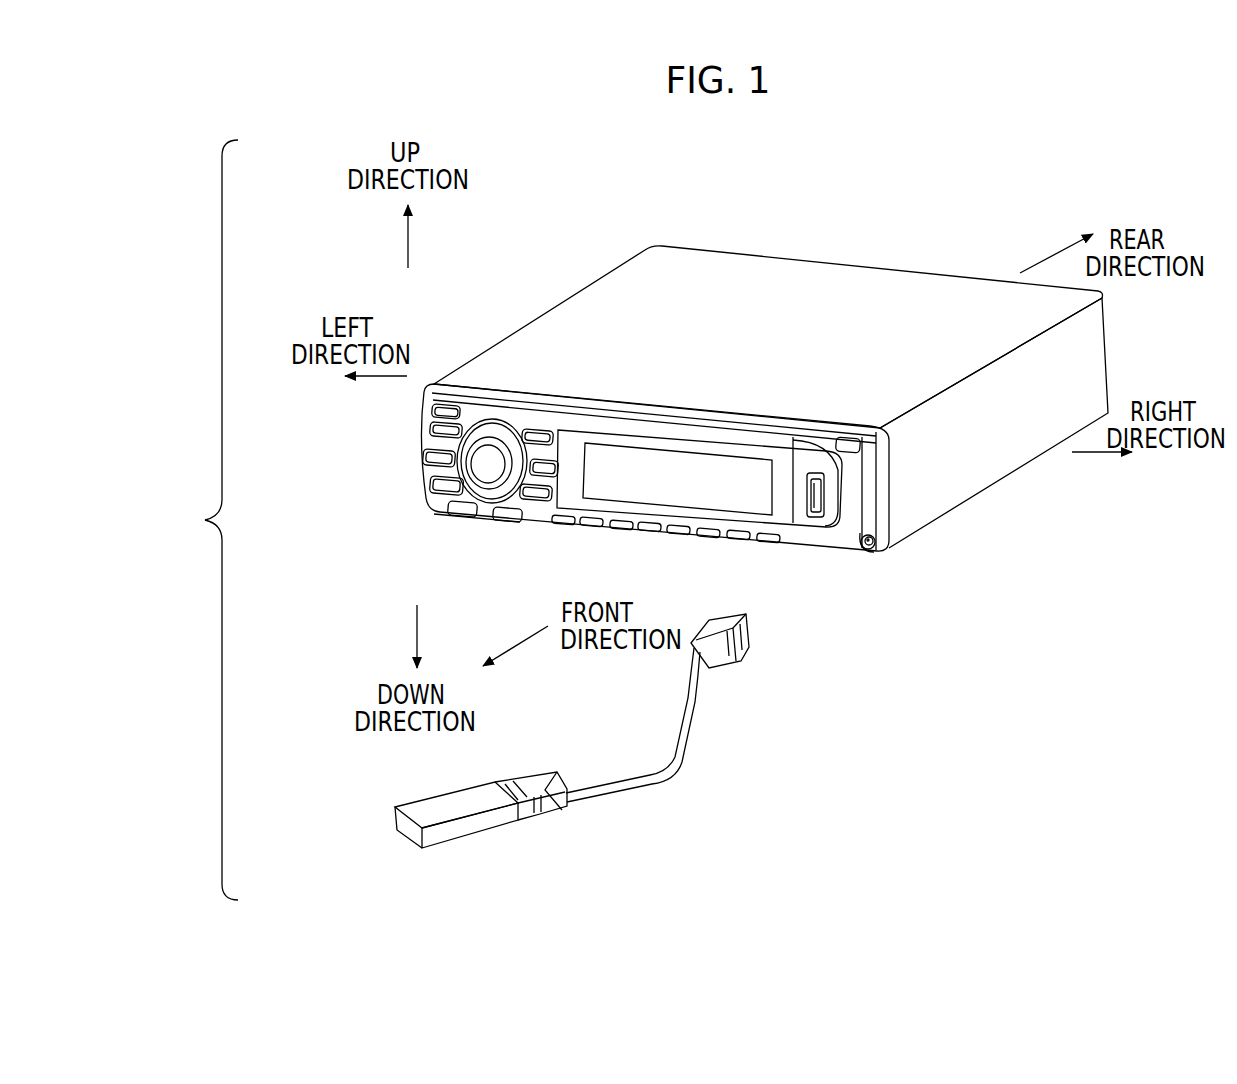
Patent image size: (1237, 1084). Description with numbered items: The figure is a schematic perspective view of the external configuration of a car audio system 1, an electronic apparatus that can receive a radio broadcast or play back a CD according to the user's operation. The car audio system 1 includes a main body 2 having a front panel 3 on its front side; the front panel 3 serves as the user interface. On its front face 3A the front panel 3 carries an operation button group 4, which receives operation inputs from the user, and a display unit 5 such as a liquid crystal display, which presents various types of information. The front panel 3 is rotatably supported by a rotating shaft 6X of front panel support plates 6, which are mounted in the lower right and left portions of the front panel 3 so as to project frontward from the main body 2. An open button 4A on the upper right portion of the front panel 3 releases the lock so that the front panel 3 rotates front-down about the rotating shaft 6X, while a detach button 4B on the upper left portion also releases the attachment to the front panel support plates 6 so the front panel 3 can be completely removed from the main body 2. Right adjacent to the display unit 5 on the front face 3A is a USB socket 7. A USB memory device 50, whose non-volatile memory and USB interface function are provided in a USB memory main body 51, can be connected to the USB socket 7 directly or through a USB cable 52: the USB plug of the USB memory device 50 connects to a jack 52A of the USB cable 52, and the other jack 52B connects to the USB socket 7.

The car audio system 1 is at (713, 372).
The main body 2 is at (690, 258).
The front panel 3 is at (421, 432).
The front face 3A is at (455, 541).
The operation button group 4 is at (576, 545).
The open button 4A is at (863, 449).
The detach button 4B is at (439, 406).
The display unit 5 is at (620, 481).
The front panel support plates 6 is at (418, 505).
The rotating shaft 6X is at (869, 549).
The USB socket 7 is at (805, 511).
The USB memory device 50 is at (549, 748).
The USB memory main body 51 is at (486, 837).
The USB cable 52 is at (672, 783).
The jack 52A is at (532, 780).
The jack 52B is at (749, 650).